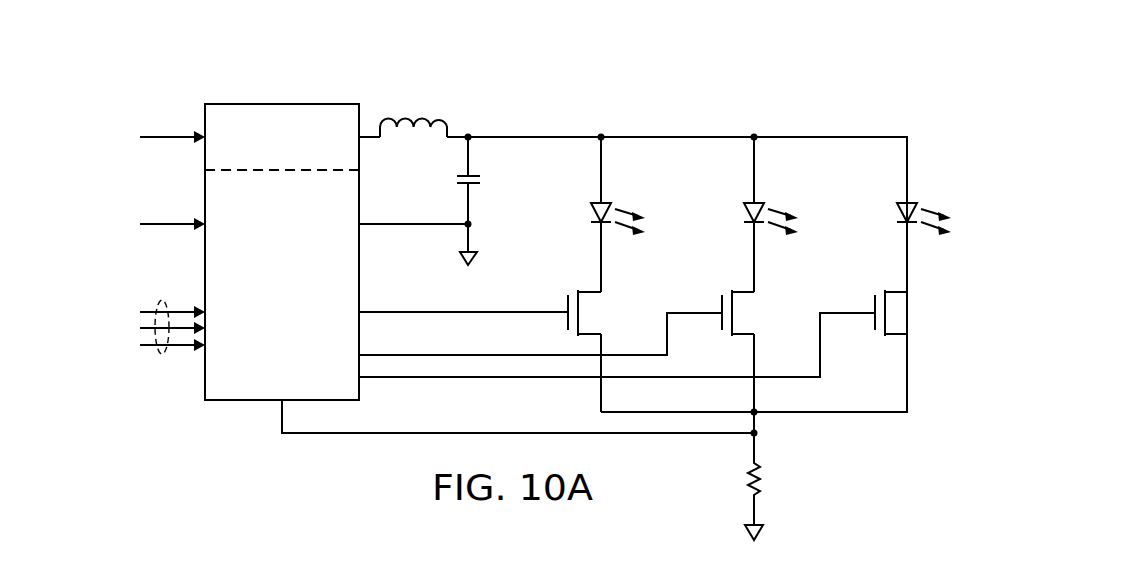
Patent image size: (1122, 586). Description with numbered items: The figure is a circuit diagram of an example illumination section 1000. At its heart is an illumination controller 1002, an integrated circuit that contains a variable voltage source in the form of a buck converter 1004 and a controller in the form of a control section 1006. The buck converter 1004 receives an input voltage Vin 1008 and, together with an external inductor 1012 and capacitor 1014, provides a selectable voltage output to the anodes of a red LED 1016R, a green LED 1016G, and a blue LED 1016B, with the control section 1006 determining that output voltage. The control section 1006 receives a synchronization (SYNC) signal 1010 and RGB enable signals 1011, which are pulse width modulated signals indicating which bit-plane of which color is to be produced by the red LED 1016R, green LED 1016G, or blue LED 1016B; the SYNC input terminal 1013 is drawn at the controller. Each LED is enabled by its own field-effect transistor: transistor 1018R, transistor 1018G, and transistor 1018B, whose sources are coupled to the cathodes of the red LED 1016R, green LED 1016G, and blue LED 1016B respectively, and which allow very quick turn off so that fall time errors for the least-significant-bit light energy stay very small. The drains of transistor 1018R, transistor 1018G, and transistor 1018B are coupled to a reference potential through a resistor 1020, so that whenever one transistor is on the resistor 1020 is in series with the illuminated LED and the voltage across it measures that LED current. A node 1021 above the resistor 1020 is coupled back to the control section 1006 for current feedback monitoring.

The illumination section 1000 is at (720, 82).
The illumination controller 1002 is at (246, 104).
The buck converter 1004 is at (310, 149).
The control section 1006 is at (310, 298).
The input voltage Vin 1008 is at (166, 132).
The synchronization (SYNC) signal 1010 is at (167, 228).
The RGB enable signals 1011 is at (163, 353).
The inductor 1012 is at (405, 117).
The SYNC input terminal 1013 is at (200, 217).
The capacitor 1014 is at (482, 182).
The red LED 1016R is at (592, 212).
The green LED 1016G is at (747, 215).
The blue LED 1016B is at (900, 215).
The transistor 1018R is at (566, 303).
The transistor 1018G is at (720, 303).
The transistor 1018B is at (873, 303).
The resistor 1020 is at (758, 480).
The node 1021 is at (762, 437).